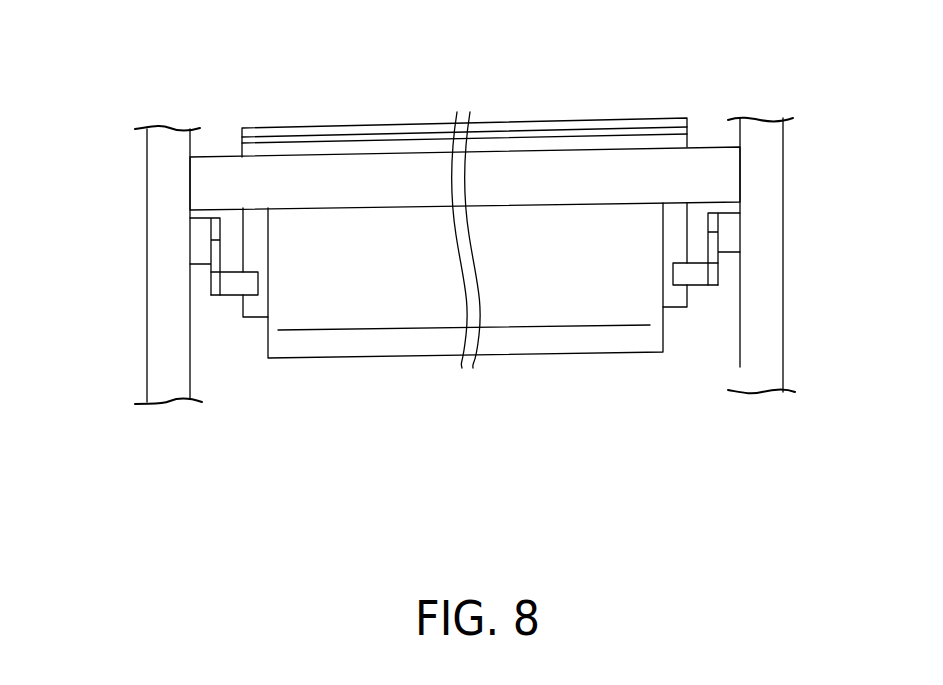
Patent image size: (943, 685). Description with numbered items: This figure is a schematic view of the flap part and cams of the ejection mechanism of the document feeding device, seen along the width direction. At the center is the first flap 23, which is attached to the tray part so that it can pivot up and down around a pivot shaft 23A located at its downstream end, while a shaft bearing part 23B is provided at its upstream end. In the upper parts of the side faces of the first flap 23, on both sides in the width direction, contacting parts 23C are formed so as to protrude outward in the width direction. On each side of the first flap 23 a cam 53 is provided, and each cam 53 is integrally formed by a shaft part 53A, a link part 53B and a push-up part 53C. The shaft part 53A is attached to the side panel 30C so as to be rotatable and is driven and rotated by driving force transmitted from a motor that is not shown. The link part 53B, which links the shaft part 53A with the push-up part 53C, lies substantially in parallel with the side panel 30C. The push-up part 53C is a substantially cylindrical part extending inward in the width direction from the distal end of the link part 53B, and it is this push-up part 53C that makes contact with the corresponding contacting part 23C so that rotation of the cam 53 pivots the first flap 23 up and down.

The first flap 23 is at (607, 113).
The pivot shaft 23A is at (535, 162).
The shaft bearing part 23B is at (545, 342).
The contacting parts 23C is at (256, 307).
The side panel 30C is at (157, 168).
The cam 53 is at (463, 273).
The shaft part 53A is at (197, 243).
The link part 53B is at (208, 283).
The push-up part 53C is at (238, 290).